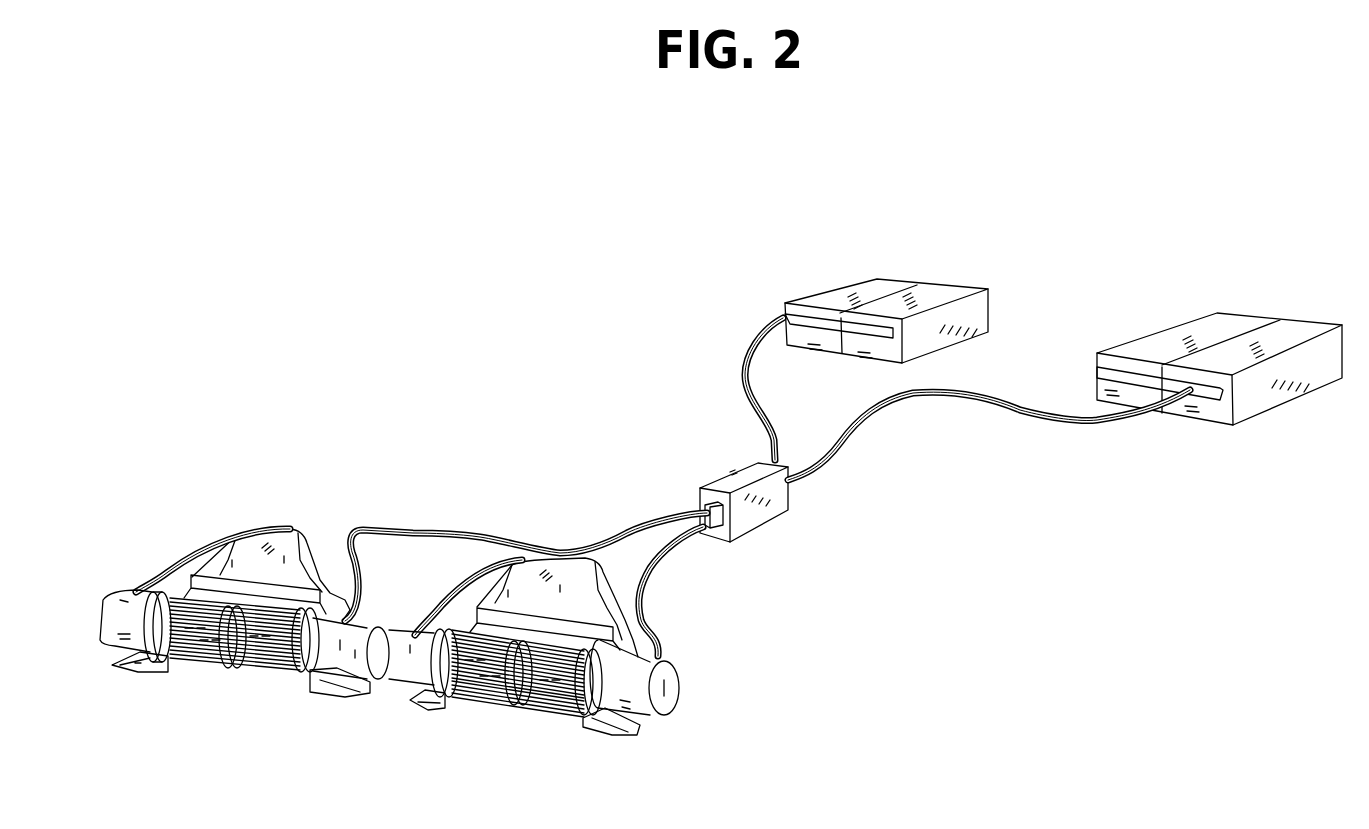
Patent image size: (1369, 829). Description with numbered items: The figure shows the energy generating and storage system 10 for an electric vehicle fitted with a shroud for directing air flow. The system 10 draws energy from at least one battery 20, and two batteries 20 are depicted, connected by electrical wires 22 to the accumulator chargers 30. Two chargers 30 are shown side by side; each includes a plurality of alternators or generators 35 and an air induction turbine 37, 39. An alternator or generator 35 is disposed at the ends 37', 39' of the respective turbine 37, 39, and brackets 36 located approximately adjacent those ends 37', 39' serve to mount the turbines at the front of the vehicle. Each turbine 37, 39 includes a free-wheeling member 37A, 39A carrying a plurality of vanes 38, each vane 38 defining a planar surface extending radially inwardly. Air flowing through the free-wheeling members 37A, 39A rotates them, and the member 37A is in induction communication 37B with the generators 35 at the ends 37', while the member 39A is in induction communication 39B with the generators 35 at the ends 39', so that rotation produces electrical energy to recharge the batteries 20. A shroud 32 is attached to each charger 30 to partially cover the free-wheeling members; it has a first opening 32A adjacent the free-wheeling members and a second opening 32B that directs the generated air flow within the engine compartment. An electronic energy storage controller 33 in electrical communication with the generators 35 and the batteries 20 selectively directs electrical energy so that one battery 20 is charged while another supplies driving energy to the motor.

The energy generating and storage system 10 is at (563, 279).
The battery 20 is at (905, 278).
The electrical wires 22 is at (670, 512).
The accumulator charger 30 is at (115, 565).
The shroud 32 is at (414, 579).
The first opening 32A is at (350, 594).
The second opening 32B is at (281, 529).
The electronic energy storage controller 33 is at (790, 508).
The alternator or generator 35 is at (102, 616).
The bracket 36 is at (133, 661).
The air induction turbine 37 is at (221, 652).
The end of turbine 37' is at (244, 644).
The free-wheeling member 37A is at (196, 672).
The induction communication 37B is at (157, 592).
The vane 38 is at (163, 633).
The air induction turbine 39 is at (530, 698).
The end of turbine 39' is at (515, 678).
The free-wheeling member 39A is at (487, 702).
The induction communication 39B is at (473, 636).